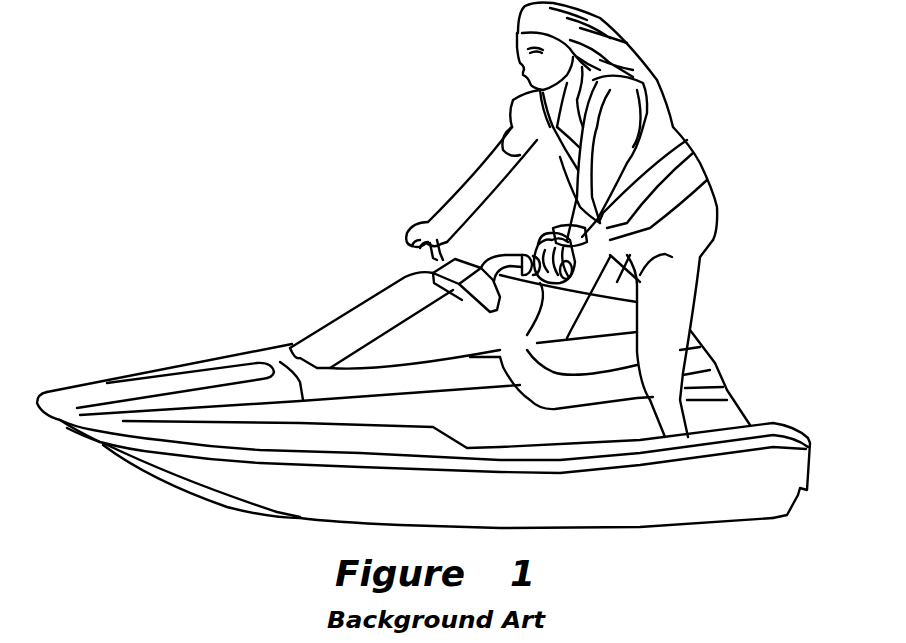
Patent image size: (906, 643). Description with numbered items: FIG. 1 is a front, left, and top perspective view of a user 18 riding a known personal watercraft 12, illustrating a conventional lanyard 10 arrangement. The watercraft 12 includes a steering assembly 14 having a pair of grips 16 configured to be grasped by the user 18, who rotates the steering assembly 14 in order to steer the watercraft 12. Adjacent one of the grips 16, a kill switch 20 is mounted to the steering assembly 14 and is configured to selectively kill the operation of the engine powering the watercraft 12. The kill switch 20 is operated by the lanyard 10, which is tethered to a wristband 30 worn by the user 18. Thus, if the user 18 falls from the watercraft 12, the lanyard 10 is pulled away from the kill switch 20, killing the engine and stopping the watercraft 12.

The lanyard 10 is at (614, 190).
The personal watercraft 12 is at (248, 346).
The steering assembly 14 is at (548, 219).
The grips 16 is at (417, 226).
The user 18 is at (667, 90).
The kill switch 20 is at (538, 247).
The wristband 30 is at (580, 241).